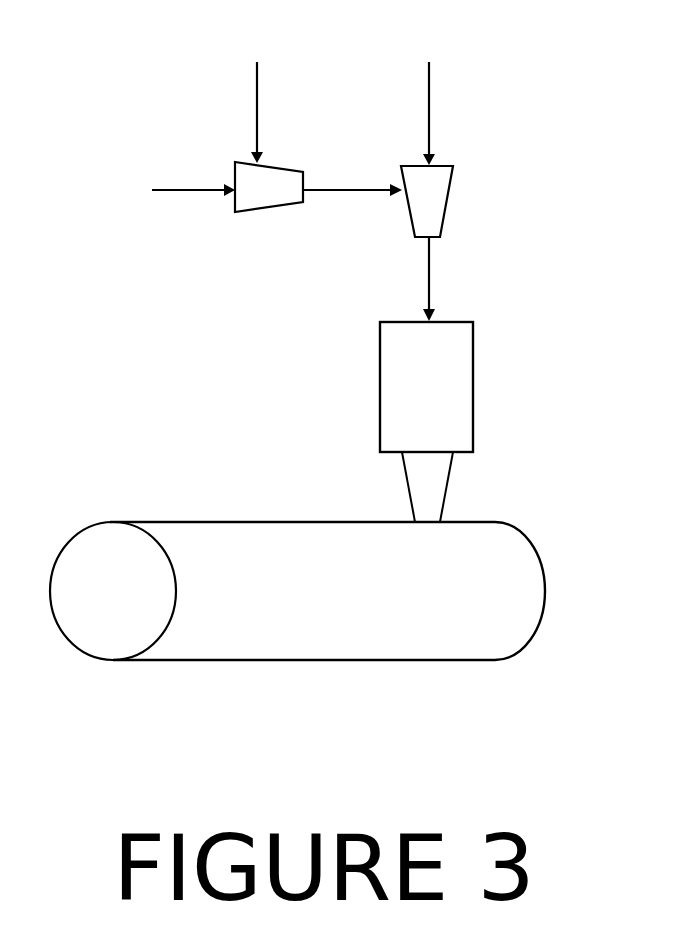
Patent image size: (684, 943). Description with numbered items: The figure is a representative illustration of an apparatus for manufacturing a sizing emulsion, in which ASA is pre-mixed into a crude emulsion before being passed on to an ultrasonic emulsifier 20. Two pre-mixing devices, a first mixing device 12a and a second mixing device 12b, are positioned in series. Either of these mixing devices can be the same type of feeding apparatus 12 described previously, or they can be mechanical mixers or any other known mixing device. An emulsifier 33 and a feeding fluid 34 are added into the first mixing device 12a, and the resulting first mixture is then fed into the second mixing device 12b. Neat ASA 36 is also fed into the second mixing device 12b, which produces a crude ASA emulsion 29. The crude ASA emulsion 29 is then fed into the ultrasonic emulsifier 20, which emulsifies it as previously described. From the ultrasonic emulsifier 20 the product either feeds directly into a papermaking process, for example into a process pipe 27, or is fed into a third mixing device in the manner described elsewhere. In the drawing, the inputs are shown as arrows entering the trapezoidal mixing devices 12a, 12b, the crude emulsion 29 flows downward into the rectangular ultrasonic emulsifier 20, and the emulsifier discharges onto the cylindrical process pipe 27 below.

The feeding apparatus 12 is at (433, 490).
The first mixing device 12a is at (262, 182).
The second mixing device 12b is at (433, 193).
The ultrasonic emulsifier 20 is at (426, 387).
The process pipe 27 is at (297, 591).
The crude ASA emulsion 29 is at (468, 279).
The emulsifier 33 is at (148, 185).
The feeding fluid 34 is at (257, 84).
The neat ASA 36 is at (430, 85).